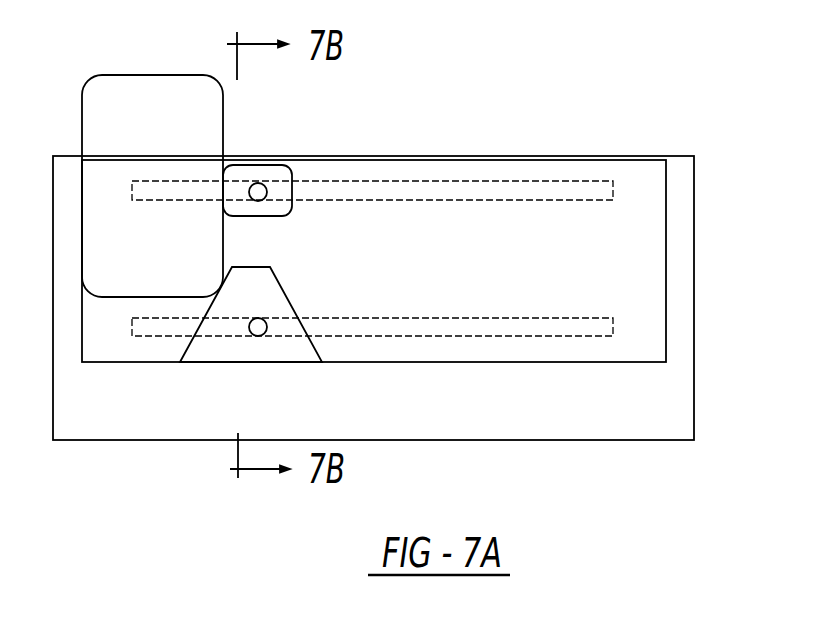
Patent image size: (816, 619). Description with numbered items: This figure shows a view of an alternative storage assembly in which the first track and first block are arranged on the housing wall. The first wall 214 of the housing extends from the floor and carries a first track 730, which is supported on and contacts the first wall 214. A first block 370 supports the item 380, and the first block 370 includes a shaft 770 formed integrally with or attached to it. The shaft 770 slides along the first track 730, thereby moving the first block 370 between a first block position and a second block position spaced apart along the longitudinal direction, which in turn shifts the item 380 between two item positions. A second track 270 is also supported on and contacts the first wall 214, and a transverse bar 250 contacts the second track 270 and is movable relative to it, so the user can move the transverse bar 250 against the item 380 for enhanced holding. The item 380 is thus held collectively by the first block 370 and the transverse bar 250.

The first wall 214 is at (602, 252).
The item 380 is at (170, 133).
The second track 270 is at (532, 180).
The first track 730 is at (525, 334).
The transverse bar 250 is at (278, 175).
The first block 370 is at (225, 350).
The shaft 770 is at (268, 329).